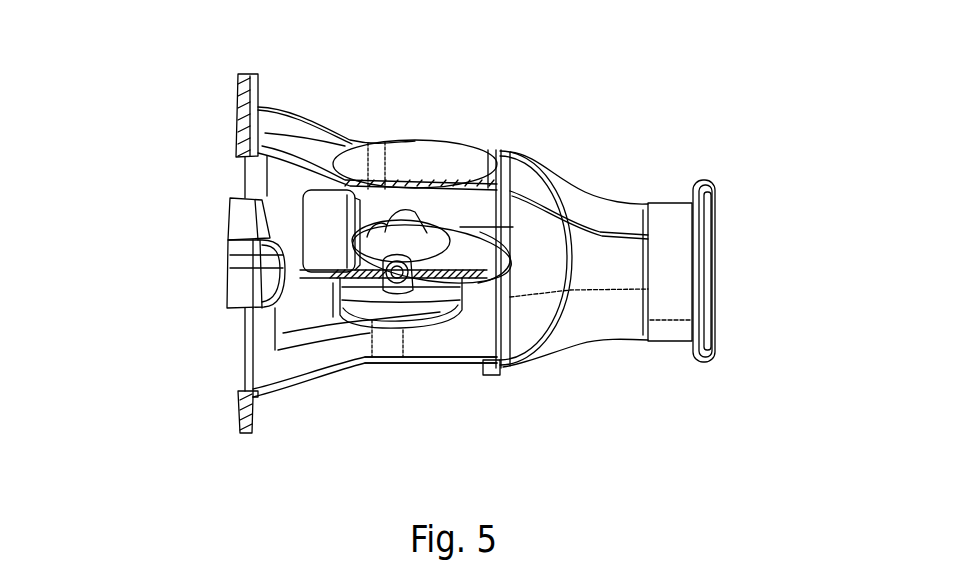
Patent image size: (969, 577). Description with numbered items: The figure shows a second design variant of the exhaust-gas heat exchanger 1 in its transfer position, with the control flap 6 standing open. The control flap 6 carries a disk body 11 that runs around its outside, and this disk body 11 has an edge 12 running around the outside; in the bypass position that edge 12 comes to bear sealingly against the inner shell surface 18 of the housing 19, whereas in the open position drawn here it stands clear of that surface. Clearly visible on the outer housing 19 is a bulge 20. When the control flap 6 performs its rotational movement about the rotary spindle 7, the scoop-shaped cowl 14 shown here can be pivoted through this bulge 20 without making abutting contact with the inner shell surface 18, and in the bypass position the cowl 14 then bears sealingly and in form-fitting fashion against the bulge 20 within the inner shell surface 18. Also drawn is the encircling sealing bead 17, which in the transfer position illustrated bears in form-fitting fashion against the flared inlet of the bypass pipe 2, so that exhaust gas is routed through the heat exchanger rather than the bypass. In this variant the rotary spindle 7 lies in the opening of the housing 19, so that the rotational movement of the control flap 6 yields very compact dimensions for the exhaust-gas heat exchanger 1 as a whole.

The exhaust-gas heat exchanger 1 is at (698, 120).
The bypass pipe 2 is at (238, 221).
The control flap 6 is at (460, 214).
The rotary spindle 7 is at (398, 266).
The disk body 11 is at (492, 254).
The edge 12 is at (515, 248).
The cowl 14 is at (328, 207).
The sealing bead 17 is at (447, 313).
The inner shell surface 18 is at (437, 352).
The housing 19 is at (454, 370).
The bulge 20 is at (434, 163).